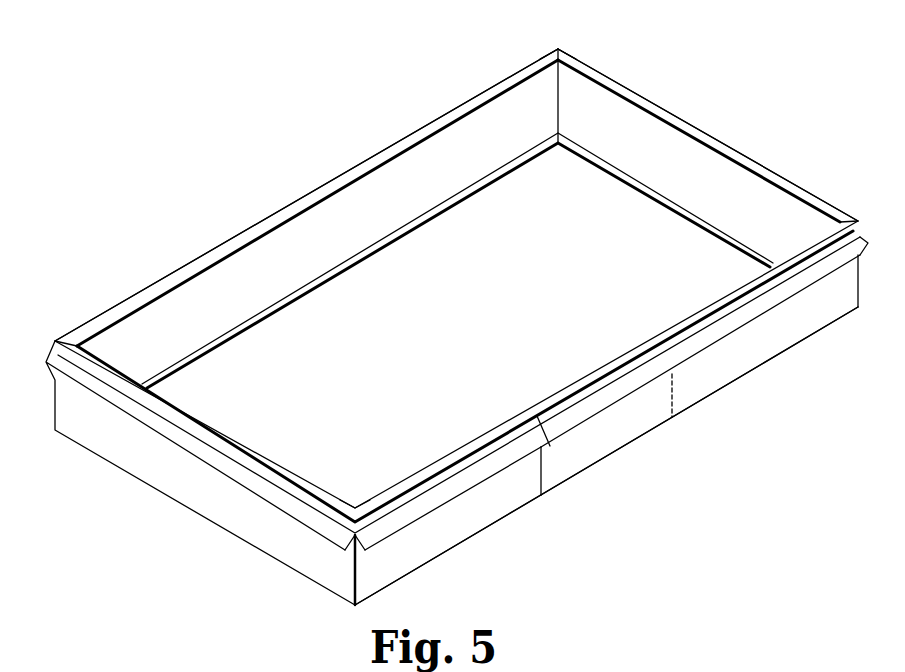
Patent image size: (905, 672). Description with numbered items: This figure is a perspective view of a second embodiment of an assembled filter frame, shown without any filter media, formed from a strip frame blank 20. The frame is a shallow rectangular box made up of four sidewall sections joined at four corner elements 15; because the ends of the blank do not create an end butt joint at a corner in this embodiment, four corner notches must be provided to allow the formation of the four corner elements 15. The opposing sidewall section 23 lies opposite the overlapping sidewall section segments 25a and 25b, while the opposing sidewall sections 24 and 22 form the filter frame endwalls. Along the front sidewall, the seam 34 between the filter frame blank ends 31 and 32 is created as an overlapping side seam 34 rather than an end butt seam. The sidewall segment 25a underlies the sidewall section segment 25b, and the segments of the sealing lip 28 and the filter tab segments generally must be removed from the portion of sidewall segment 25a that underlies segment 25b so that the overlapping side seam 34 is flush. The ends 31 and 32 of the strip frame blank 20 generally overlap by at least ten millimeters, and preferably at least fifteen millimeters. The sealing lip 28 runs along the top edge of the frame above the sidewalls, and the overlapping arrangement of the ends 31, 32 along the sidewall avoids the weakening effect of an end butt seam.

The corner element 15 is at (550, 52).
The strip frame blank 20 is at (684, 121).
The sidewall section 22 is at (748, 203).
The opposing sidewall section 23 is at (293, 240).
The sidewall section 24 is at (270, 532).
The sidewall segment 25a is at (482, 510).
The sidewall section segment 25b is at (775, 340).
The sealing lip 28 is at (855, 255).
The filter frame blank end 31 is at (674, 395).
The filter frame blank end 32 is at (542, 480).
The overlapping side seam 34 is at (628, 440).